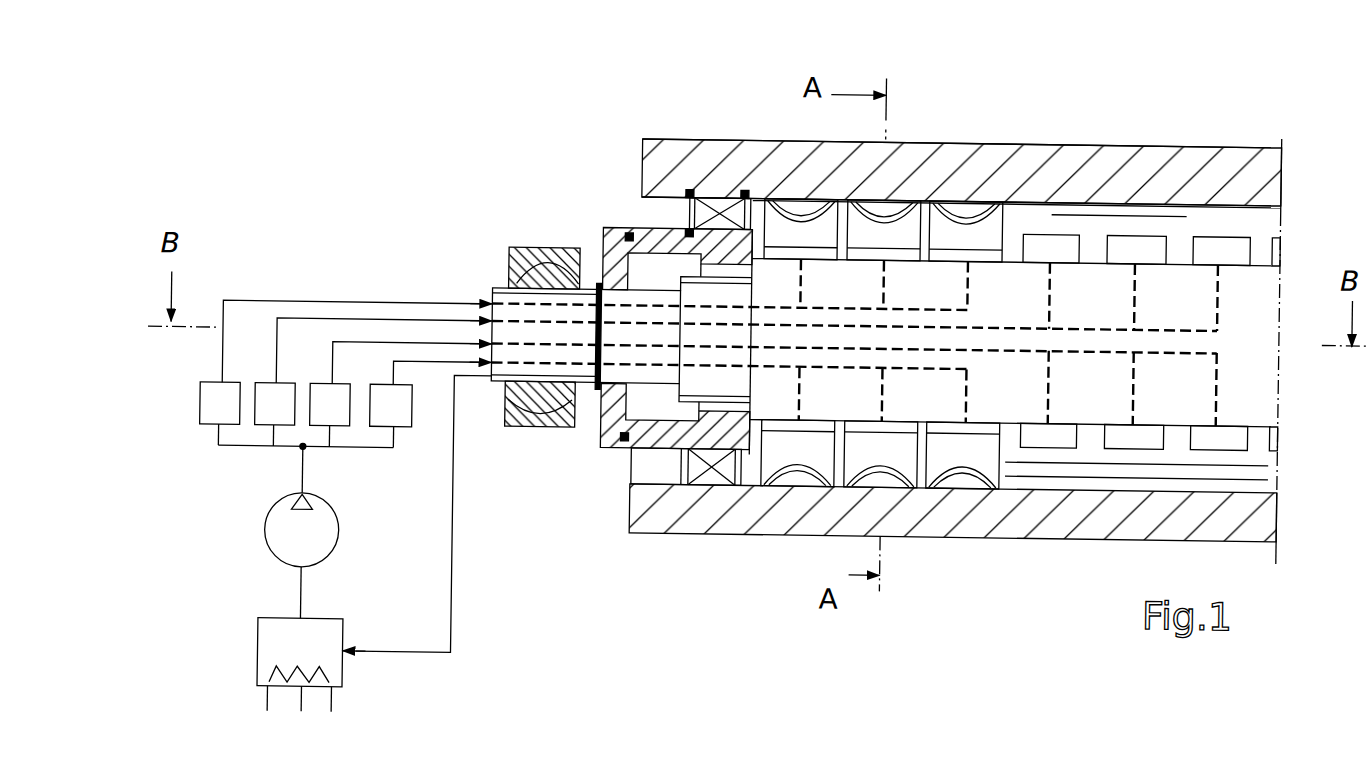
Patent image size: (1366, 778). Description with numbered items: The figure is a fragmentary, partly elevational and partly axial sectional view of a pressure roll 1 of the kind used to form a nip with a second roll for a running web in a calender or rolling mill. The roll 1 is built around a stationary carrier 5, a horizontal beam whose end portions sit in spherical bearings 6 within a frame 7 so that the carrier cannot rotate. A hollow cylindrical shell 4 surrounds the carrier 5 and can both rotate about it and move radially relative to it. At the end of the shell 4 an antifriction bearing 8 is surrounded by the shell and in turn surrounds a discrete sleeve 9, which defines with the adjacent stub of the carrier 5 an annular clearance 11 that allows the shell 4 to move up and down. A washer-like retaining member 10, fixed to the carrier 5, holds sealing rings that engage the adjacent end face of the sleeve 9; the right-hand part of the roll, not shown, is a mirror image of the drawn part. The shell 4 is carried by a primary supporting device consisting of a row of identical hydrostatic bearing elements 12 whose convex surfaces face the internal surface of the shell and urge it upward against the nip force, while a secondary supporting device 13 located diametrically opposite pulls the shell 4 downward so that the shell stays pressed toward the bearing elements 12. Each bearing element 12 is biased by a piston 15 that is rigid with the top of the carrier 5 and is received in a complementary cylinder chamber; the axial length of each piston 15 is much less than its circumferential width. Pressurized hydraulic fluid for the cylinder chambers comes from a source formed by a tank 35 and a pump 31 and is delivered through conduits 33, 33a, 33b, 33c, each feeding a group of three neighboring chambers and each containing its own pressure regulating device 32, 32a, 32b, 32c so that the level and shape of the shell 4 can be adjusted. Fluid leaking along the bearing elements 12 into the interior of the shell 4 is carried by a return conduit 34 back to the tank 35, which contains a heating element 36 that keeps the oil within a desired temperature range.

The pressure roll 1 is at (1040, 131).
The hollow cylindrical shell 4 is at (1140, 157).
The stationary carrier 5 is at (1267, 355).
The spherical bearings 6 is at (511, 252).
The frame 7 is at (547, 246).
The antifriction bearings 8 is at (717, 199).
The sleeves 9 is at (662, 237).
The retaining member 10 is at (672, 452).
The annular clearances 11 is at (713, 403).
The hydrostatic bearing elements 12 is at (798, 232).
The secondary supporting device 13 is at (803, 440).
The piston 15 is at (1221, 237).
The pump 31 is at (285, 550).
The pressure regulating device 32 is at (216, 413).
The pressure regulating device 32a is at (271, 414).
The pressure regulating device 32b is at (346, 411).
The pressure regulating device 32c is at (406, 408).
The conduit 33 is at (266, 306).
The conduit 33a is at (318, 323).
The conduit 33b is at (375, 346).
The conduit 33c is at (432, 364).
The return conduit 34 is at (456, 599).
The tank 35 is at (276, 645).
The heating element 36 is at (307, 716).